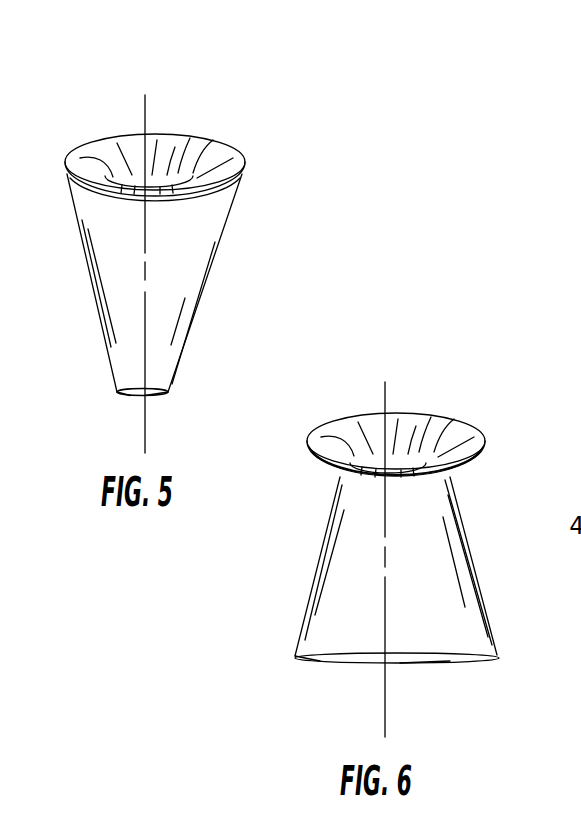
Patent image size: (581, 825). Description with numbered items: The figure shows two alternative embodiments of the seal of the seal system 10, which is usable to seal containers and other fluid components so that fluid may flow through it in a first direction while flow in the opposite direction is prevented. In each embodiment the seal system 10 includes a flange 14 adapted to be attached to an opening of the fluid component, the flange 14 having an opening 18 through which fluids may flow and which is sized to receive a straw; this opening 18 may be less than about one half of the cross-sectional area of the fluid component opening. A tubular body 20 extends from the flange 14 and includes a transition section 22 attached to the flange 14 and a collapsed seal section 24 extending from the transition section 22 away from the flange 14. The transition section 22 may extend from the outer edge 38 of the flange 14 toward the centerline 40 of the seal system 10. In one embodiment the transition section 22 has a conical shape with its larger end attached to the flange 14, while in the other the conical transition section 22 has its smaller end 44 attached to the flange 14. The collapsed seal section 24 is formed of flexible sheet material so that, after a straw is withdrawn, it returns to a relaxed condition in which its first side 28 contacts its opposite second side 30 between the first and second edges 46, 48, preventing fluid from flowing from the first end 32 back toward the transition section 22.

In FIG. 5, the seal system 10 is at (290, 78).
In FIG. 6, the seal system 10 is at (472, 324).
In FIG. 5, the flange 14 is at (88, 138).
In FIG. 6, the flange 14 is at (328, 422).
In FIG. 5, the opening 18 is at (187, 167).
In FIG. 6, the opening 18 is at (430, 437).
In FIG. 5, the tubular body 20 is at (57, 175).
In FIG. 6, the tubular body 20 is at (328, 488).
In FIG. 5, the transition section 22 is at (248, 172).
In FIG. 6, the transition section 22 is at (458, 482).
In FIG. 5, the collapsed seal section 24 is at (222, 268).
In FIG. 6, the collapsed seal section 24 is at (480, 550).
In FIG. 5, the first side 28 is at (161, 260).
In FIG. 6, the first side 28 is at (335, 617).
In FIG. 5, the second side 30 is at (133, 395).
In FIG. 6, the second side 30 is at (355, 663).
In FIG. 5, the first end 32 is at (155, 395).
In FIG. 6, the first end 32 is at (432, 663).
In FIG. 5, the outer edge 38 is at (247, 165).
In FIG. 6, the outer edge 38 is at (486, 447).
In FIG. 5, the centerline 40 is at (147, 100).
In FIG. 6, the centerline 40 is at (387, 382).
In FIG. 6, the smaller end 44 is at (480, 477).
In FIG. 5, the first edge 46 is at (119, 394).
In FIG. 6, the first edge 46 is at (292, 656).
In FIG. 5, the second edge 48 is at (215, 263).
In FIG. 6, the second edge 48 is at (500, 656).